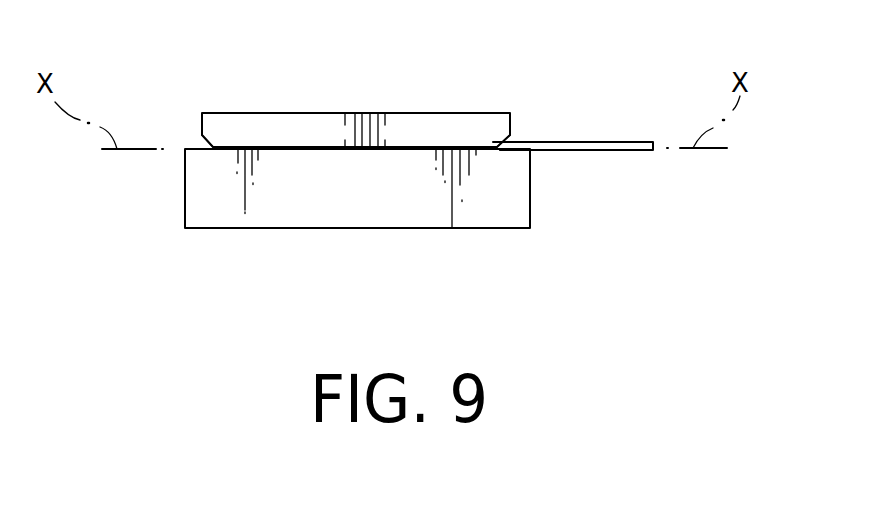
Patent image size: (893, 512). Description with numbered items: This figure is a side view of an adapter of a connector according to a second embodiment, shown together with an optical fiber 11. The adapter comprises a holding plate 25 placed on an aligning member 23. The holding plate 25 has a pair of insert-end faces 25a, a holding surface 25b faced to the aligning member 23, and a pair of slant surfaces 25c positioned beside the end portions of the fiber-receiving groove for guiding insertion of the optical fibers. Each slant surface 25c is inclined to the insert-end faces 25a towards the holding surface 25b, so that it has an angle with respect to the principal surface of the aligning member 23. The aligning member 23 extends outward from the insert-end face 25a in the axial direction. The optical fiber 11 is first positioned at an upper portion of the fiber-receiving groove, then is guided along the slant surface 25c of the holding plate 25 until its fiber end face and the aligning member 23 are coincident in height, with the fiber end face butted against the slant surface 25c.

The optical fiber 11 is at (580, 141).
The aligning member 23 is at (387, 228).
The holding plate 25 is at (367, 112).
The insert-end faces 25a is at (201, 125).
The holding surface 25b is at (288, 150).
The slant surfaces 25c is at (200, 142).